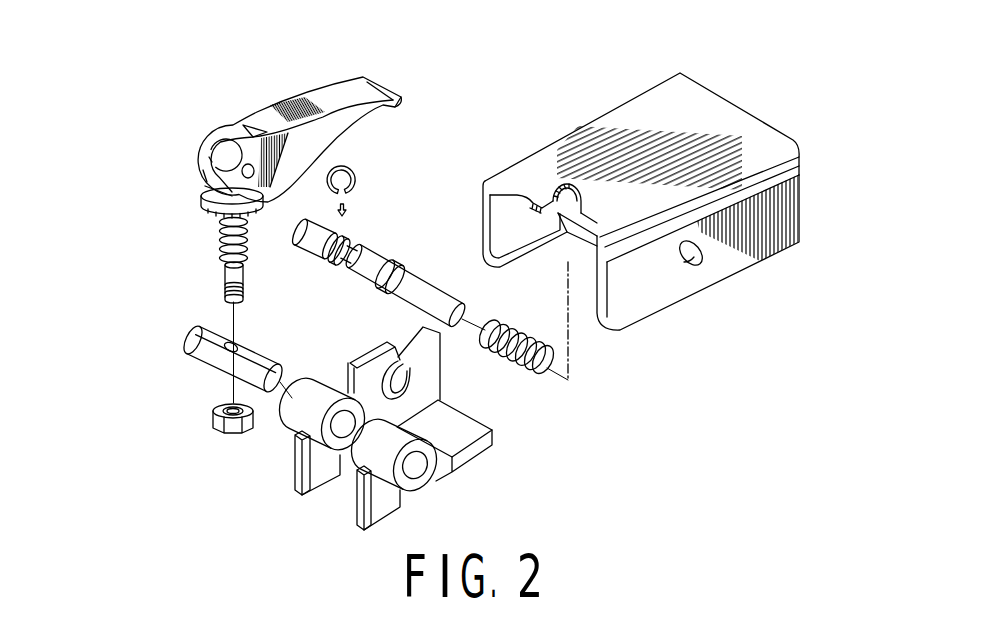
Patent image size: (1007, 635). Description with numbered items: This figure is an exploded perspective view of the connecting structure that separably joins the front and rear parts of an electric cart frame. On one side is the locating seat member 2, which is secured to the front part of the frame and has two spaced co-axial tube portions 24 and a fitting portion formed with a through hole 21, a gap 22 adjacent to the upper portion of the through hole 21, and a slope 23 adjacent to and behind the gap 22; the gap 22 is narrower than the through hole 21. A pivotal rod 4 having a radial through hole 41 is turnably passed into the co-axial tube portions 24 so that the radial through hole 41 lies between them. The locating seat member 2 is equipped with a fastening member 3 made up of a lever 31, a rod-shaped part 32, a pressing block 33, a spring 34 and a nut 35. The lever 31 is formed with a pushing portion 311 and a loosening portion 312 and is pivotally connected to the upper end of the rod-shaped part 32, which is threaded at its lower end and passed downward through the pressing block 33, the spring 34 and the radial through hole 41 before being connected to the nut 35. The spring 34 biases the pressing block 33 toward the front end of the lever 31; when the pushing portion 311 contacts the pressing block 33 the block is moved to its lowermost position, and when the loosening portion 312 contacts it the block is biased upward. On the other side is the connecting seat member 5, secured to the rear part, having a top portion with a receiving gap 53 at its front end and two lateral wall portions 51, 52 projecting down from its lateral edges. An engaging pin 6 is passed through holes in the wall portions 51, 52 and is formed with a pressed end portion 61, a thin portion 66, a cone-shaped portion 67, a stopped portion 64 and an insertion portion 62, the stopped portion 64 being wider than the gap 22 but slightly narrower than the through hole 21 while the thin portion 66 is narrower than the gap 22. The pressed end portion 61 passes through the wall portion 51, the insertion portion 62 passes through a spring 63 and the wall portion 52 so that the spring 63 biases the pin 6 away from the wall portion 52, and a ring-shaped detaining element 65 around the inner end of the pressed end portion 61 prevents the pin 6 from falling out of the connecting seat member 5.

The locating seat member 2 is at (454, 428).
The through hole 21 is at (432, 428).
The gap 22 is at (406, 363).
The slope 23 is at (400, 357).
The co-axial tube portions 24 is at (413, 483).
The fastening member 3 is at (285, 221).
The lever 31 is at (295, 121).
The pushing portion 311 is at (380, 120).
The loosening portion 312 is at (210, 186).
The rod-shaped part 32 is at (225, 278).
The pressing block 33 is at (213, 207).
The spring 34 is at (222, 246).
The nut 35 is at (235, 434).
The pivotal rod 4 is at (212, 389).
The radial through hole 41 is at (200, 357).
The connecting seat member 5 is at (641, 225).
The lateral wall portion 51 is at (540, 196).
The lateral wall portion 52 is at (650, 310).
The receiving gap 53 is at (554, 124).
The engaging pin 6 is at (448, 252).
The pressed end portion 61 is at (312, 245).
The insertion portion 62 is at (550, 197).
The spring 63 is at (507, 367).
The stopped portion 64 is at (443, 292).
The detaining element 65 is at (355, 178).
The thin portion 66 is at (347, 242).
The cone-shaped portion 67 is at (368, 255).